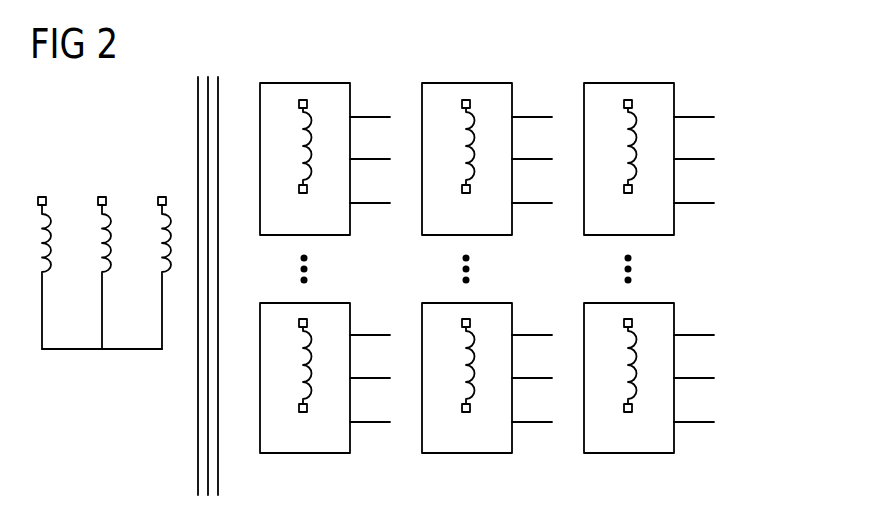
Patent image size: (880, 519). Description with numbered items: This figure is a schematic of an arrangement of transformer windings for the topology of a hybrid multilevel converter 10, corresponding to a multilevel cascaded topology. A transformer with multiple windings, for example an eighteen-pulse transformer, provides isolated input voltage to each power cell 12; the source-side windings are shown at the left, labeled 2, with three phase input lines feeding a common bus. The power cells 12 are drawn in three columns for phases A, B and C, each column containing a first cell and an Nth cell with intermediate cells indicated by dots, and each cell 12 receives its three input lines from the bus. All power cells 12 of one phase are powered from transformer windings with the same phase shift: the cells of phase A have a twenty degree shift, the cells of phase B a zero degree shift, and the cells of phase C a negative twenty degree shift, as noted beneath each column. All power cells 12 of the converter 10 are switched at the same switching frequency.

The three-phase power source 2 is at (95, 383).
The hybrid multilevel converter 10 is at (737, 47).
The power cell 12 is at (325, 83).